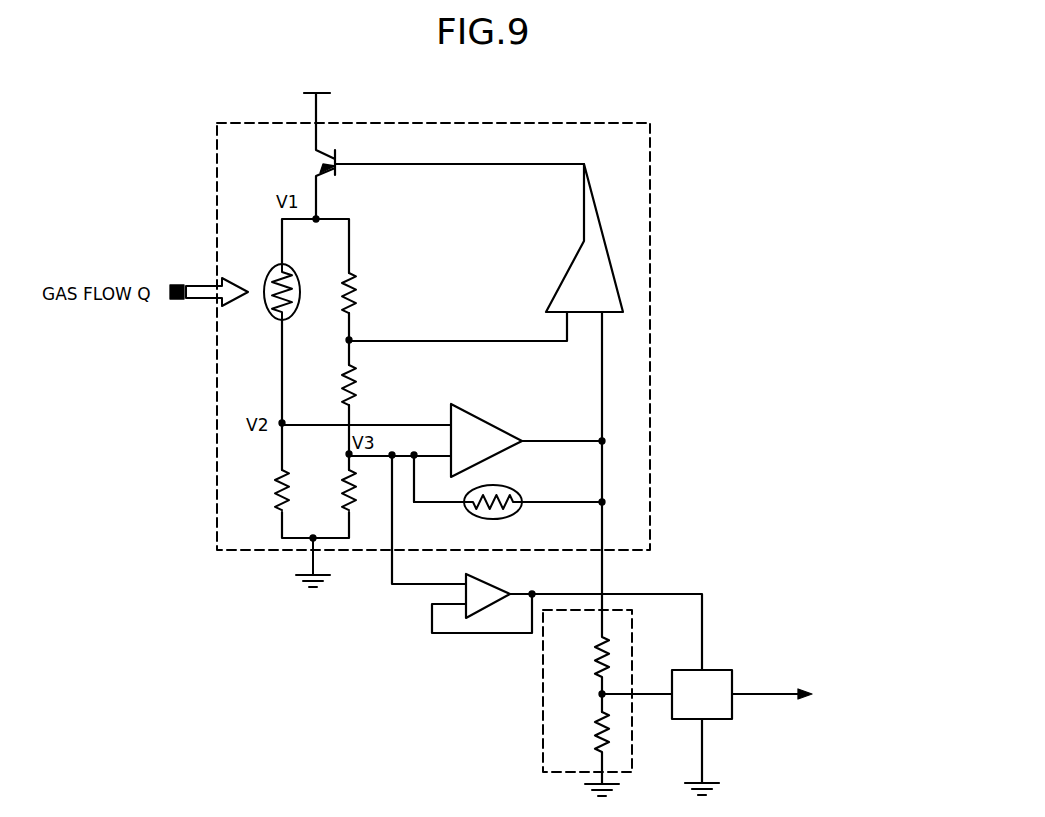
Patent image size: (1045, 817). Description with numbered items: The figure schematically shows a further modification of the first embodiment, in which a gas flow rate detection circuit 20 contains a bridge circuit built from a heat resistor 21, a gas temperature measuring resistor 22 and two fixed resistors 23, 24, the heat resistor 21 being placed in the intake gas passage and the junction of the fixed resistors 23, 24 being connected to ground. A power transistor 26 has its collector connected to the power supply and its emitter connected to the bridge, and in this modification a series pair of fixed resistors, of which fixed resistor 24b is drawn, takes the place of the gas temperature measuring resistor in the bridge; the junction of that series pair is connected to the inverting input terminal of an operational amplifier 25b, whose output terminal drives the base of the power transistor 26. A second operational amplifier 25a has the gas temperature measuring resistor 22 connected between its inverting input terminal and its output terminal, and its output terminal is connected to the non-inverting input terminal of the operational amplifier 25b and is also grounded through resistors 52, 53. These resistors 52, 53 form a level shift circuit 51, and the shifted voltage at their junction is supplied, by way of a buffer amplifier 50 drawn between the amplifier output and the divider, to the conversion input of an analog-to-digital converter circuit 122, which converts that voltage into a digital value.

The gas flow rate detection circuit 20 is at (217, 141).
The heat resistor 21 is at (264, 264).
The gas temperature measuring resistor 22 is at (340, 268).
The fixed resistor 23 is at (264, 488).
The fixed resistor 24 is at (336, 468).
The fixed resistor 24b is at (340, 377).
The operational amplifier 25a is at (490, 418).
The operational amplifier 25b is at (568, 262).
The power transistor 26 is at (345, 152).
The buffer amplifier 50 is at (466, 612).
The level shift circuit 51 is at (542, 703).
The resistor 52 is at (585, 658).
The resistor 53 is at (585, 727).
The A/D converter circuit 122 is at (722, 720).